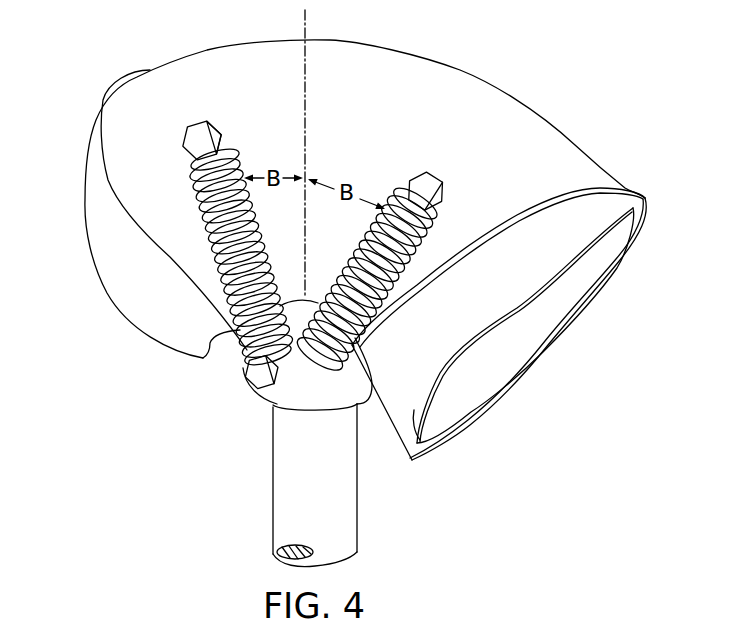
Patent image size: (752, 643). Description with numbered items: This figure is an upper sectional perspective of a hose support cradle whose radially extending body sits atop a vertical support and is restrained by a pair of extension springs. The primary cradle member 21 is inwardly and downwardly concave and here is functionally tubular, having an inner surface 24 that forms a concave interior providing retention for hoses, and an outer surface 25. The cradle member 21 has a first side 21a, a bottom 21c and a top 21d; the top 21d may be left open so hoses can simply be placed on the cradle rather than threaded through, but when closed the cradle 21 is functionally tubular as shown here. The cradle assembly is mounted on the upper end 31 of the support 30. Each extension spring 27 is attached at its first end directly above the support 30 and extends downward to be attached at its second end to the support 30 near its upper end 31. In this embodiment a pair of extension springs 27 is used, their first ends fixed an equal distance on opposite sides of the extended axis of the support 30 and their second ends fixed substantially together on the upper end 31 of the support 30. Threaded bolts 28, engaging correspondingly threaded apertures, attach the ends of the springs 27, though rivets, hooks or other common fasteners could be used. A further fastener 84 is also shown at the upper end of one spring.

The primary cradle member 21 is at (519, 95).
The first side 21a is at (143, 135).
The bottom 21c is at (203, 360).
The top 21d is at (556, 122).
The inner surface 24 is at (567, 292).
The outer surface 25 is at (420, 440).
The extension spring 27 is at (207, 245).
The threaded bolt 28 is at (193, 133).
The support 30 is at (384, 541).
The upper end 31 is at (307, 400).
The nut 84 is at (413, 187).